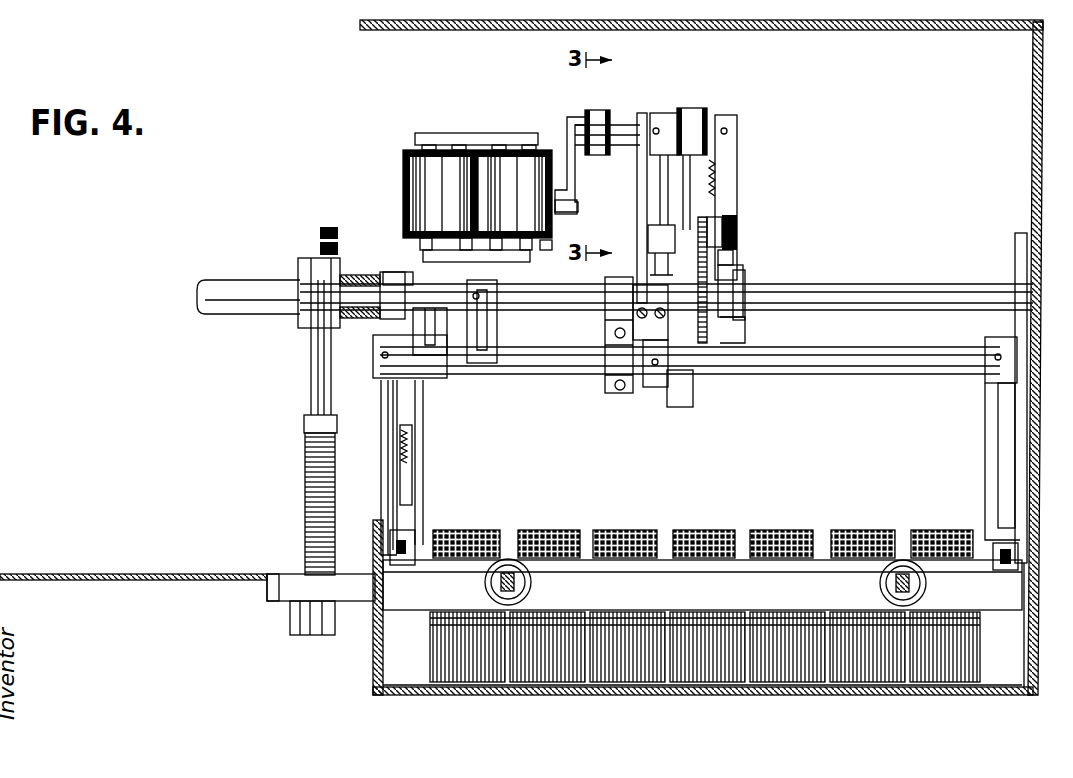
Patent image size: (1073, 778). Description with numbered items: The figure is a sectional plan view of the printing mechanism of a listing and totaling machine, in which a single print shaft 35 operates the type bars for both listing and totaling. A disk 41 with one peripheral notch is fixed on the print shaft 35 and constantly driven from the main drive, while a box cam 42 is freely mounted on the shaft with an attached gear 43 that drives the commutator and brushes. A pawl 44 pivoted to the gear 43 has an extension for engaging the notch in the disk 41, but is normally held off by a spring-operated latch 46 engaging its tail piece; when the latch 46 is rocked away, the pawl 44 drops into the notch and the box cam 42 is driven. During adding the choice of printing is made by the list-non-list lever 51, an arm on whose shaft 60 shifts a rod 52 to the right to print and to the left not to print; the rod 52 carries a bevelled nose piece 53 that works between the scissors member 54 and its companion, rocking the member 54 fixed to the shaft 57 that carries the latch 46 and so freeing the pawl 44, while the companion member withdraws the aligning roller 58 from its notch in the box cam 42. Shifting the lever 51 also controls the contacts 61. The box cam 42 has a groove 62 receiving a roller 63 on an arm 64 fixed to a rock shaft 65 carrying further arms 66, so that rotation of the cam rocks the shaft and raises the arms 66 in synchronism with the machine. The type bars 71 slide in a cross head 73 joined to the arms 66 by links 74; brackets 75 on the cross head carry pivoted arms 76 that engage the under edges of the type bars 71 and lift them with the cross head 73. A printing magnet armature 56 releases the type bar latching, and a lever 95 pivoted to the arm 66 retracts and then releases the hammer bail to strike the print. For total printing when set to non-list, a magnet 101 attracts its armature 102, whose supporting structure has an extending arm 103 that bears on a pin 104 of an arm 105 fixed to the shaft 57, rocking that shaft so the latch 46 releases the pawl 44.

The print shaft 35 is at (848, 292).
The disk 41 is at (724, 276).
The box cam 42 is at (695, 395).
The gear 43 is at (707, 245).
The pawl 44 is at (727, 245).
The latch 46 is at (725, 180).
The list-non-list lever 51 is at (318, 625).
The rod 52 is at (360, 287).
The nose piece 53 is at (612, 290).
The scissors member 54 is at (640, 170).
The armature 56 is at (678, 158).
The shaft 57 is at (622, 130).
The aligning roller 58 is at (742, 320).
The shaft 60 is at (312, 383).
The contacts 61 is at (325, 230).
The groove 62 is at (320, 247).
The roller 63 is at (667, 230).
The arm 64 is at (650, 387).
The rock shaft 65 is at (836, 374).
The arms 66 is at (393, 445).
The type bars 71 is at (472, 528).
The cross head 73 is at (702, 585).
The links 74 is at (420, 530).
The brackets 75 is at (506, 684).
The arms 76 is at (545, 615).
The lever 95 is at (410, 470).
The magnet 101 is at (403, 165).
The armature 102 is at (505, 258).
The extending arm 103 is at (548, 250).
The pin 104 is at (575, 207).
The arm 105 is at (568, 127).